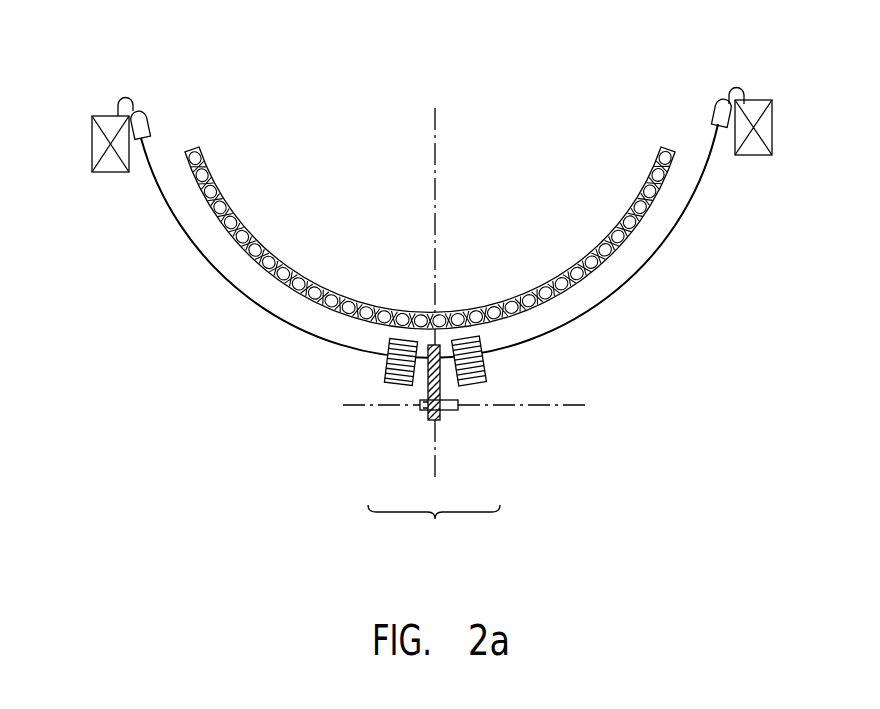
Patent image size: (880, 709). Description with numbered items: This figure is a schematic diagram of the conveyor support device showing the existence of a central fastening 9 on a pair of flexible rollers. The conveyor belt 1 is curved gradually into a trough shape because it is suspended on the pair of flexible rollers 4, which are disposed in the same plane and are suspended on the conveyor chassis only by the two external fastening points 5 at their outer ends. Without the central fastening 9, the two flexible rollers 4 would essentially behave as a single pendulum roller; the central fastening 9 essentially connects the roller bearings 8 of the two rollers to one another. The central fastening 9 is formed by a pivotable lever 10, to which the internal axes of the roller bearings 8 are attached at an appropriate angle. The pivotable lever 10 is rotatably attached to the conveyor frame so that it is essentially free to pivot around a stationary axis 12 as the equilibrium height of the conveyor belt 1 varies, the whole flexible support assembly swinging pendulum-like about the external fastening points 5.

The conveyor belt 1 is at (612, 237).
The flexible rollers 4 is at (247, 298).
The external fastening points 5 is at (128, 97).
The roller bearings 8 is at (387, 388).
The central fastening 9 is at (434, 529).
The pivotable lever 10 is at (428, 392).
The stationary axis 12 is at (555, 403).